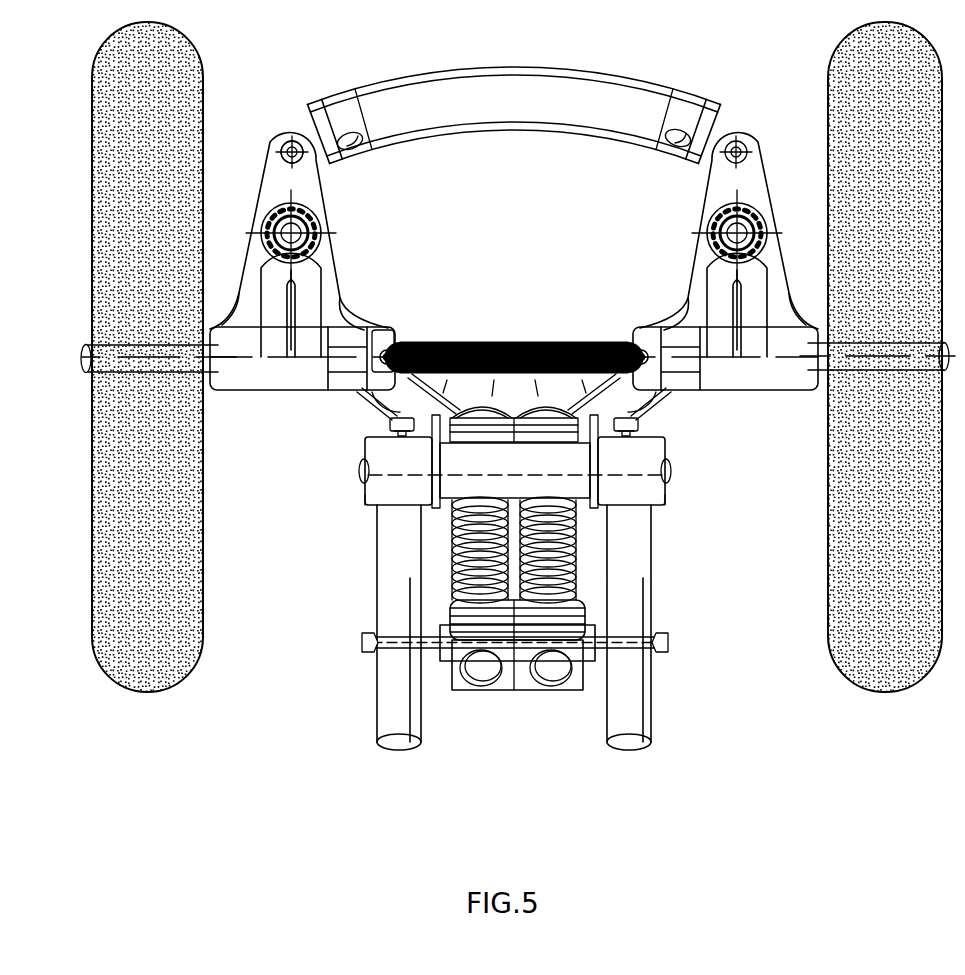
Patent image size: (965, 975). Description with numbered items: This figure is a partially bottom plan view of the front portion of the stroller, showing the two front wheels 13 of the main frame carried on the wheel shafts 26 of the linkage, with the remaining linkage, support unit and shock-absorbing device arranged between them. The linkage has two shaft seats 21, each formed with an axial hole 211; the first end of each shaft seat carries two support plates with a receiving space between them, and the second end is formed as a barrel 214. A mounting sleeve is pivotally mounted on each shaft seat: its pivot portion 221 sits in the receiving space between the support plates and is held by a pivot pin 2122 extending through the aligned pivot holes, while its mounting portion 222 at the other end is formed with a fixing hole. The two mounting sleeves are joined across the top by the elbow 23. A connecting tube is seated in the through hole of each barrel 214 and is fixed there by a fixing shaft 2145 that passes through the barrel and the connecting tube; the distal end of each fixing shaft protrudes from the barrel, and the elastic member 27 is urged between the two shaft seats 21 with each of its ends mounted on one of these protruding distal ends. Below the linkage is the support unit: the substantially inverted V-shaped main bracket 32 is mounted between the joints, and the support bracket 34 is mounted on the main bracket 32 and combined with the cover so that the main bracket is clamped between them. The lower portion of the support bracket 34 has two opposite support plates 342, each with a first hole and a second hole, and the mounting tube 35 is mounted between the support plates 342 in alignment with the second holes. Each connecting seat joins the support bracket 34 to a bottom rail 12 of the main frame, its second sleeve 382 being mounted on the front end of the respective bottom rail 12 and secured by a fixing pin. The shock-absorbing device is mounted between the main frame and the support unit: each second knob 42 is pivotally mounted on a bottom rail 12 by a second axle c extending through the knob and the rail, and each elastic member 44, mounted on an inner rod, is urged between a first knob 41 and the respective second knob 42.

The bottom rail 12 is at (392, 702).
The front wheel 13 is at (138, 567).
The shaft seat 21 is at (690, 190).
The axial hole 211 is at (718, 250).
The barrel 214 is at (766, 376).
The pivot portion 221 is at (728, 132).
The mounting portion 222 is at (691, 112).
The pivot pin 2122 is at (291, 146).
The fixing shaft 2145 is at (386, 348).
The elbow 23 is at (514, 89).
The wheel shaft 26 is at (150, 378).
The elastic member 27 is at (496, 342).
The main bracket 32 is at (650, 395).
The support bracket 34 is at (395, 408).
The support plate 342 is at (596, 458).
The mounting tube 35 is at (462, 486).
The second sleeve 382 is at (652, 494).
The first knob 41 is at (470, 446).
The second knob 42 is at (508, 690).
The elastic member 44 is at (583, 540).
The second axle c is at (625, 650).